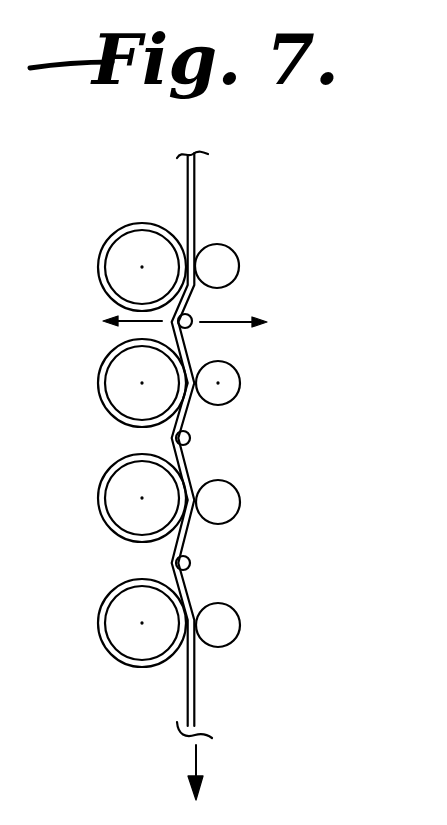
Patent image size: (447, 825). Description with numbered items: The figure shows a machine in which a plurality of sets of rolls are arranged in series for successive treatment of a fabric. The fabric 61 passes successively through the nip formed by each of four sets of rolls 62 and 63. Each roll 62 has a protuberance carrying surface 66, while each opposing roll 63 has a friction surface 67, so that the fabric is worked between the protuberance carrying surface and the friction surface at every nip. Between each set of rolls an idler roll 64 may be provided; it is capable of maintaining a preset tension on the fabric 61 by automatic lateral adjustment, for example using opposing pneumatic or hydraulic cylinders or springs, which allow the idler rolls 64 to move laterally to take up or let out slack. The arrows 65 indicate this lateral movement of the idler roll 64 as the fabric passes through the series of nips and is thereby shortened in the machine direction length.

The fabric 61 is at (197, 202).
The roll 62 is at (106, 454).
The roll 63 is at (272, 454).
The idler roll 64 is at (191, 326).
The reciprocating movement arrows 65 is at (223, 317).
The protuberance carrying surface 66 is at (101, 359).
The friction surface 67 is at (237, 258).